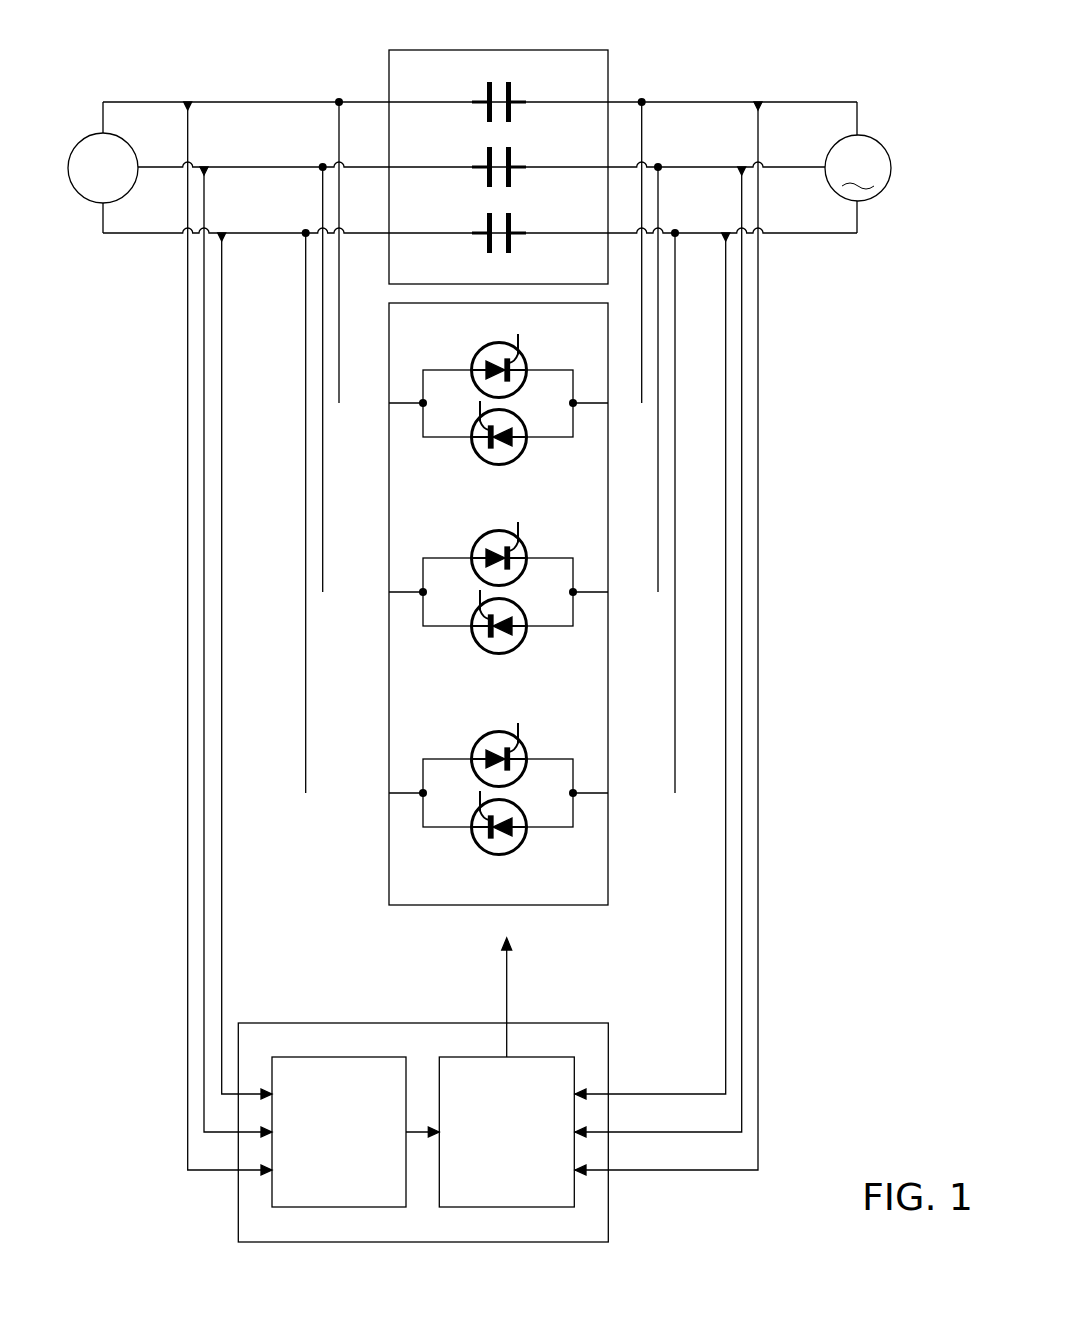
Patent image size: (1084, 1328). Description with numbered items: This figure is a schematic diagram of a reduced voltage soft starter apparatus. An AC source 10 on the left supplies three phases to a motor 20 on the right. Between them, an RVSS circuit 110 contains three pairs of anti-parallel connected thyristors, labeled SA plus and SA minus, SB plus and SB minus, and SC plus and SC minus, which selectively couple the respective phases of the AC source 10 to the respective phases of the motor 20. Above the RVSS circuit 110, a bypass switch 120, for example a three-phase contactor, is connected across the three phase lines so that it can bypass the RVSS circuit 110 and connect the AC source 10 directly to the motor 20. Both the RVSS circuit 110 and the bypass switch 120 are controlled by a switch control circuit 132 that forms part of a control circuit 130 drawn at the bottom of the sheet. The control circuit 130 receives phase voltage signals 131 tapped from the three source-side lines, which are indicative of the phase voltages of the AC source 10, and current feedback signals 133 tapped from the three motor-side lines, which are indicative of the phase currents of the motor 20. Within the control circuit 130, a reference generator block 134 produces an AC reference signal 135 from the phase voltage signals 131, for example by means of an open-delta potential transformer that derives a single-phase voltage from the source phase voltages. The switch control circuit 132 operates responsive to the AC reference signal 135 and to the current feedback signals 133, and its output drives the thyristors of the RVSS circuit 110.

The AC source 10 is at (86, 197).
The motor 20 is at (876, 196).
The RVSS circuit 110 is at (567, 905).
The bypass switch 120 is at (498, 50).
The control circuit 130 is at (423, 1090).
The phase voltage signals 131 is at (170, 955).
The switch control circuit 132 is at (506, 1132).
The current feedback signals 133 is at (777, 1005).
The reference generator 134 is at (339, 1132).
The AC reference signal 135 is at (424, 1130).